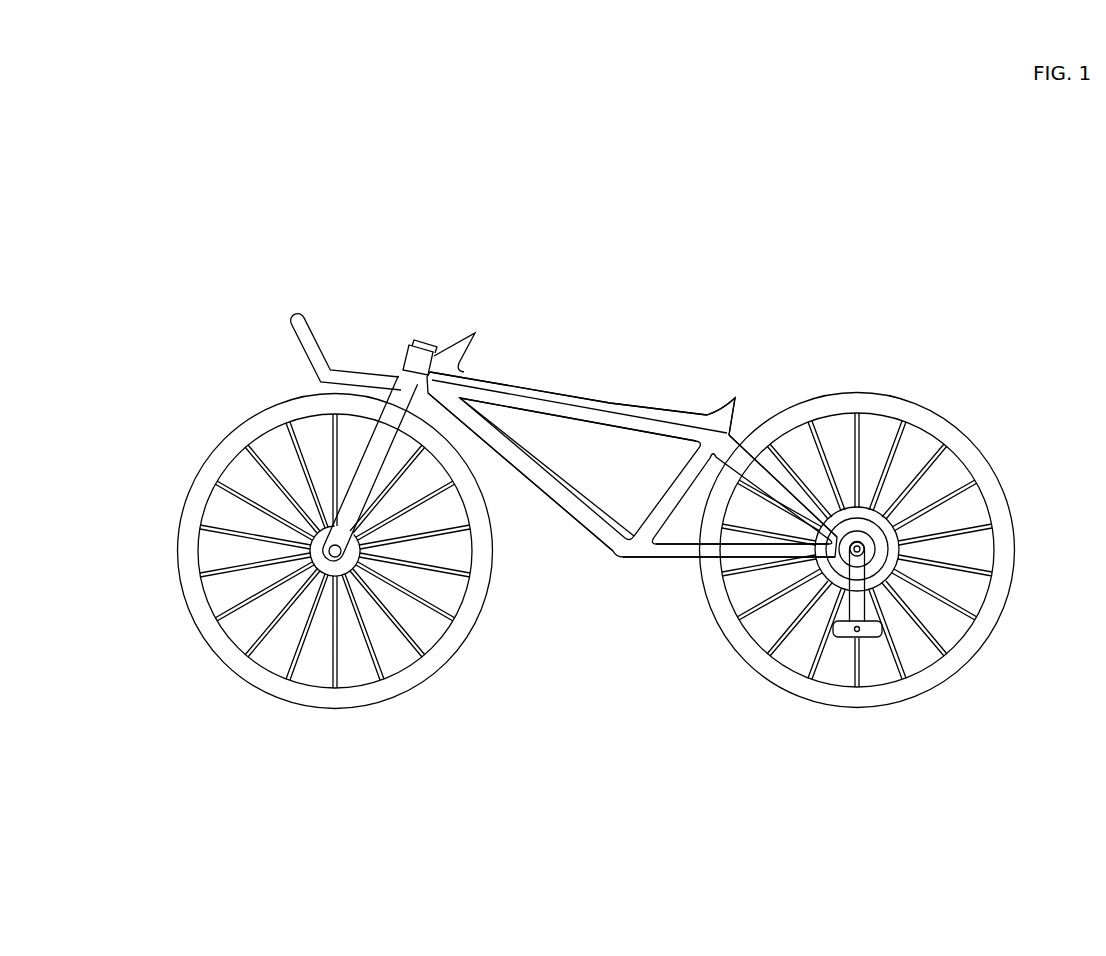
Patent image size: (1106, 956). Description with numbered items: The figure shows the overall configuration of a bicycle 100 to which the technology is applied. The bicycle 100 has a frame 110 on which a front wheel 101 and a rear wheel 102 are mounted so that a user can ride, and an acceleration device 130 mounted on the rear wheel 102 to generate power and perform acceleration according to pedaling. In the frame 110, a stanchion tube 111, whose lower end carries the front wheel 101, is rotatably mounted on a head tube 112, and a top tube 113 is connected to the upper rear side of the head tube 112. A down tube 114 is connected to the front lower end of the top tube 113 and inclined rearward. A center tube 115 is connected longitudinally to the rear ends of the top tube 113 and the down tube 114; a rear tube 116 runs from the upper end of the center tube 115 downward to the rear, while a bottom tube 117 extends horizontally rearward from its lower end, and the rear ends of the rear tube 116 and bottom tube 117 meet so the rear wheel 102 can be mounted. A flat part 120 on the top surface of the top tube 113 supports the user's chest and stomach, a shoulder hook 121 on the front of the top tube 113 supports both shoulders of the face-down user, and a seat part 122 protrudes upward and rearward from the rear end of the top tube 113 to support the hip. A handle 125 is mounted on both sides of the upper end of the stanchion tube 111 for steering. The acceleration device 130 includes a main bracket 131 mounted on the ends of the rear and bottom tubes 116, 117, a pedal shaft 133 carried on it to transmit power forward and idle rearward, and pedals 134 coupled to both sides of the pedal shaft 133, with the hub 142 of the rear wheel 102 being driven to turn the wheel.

The bicycle 100 is at (592, 727).
The front wheel 101 is at (190, 546).
The rear wheel 102 is at (972, 633).
The frame 110 is at (600, 578).
The stanchion tube 111 is at (375, 478).
The head tube 112 is at (413, 343).
The top tube 113 is at (556, 391).
The down tube 114 is at (543, 490).
The center tube 115 is at (667, 503).
The rear tube 116 is at (747, 436).
The bottom tube 117 is at (682, 557).
The flat part 120 is at (623, 412).
The shoulder hook 121 is at (475, 333).
The seat part 122 is at (715, 410).
The handle 125 is at (300, 322).
The acceleration device 130 is at (913, 532).
The main bracket 131 is at (835, 578).
The pedal shaft 133 is at (880, 585).
The pedals 134 is at (868, 638).
The hub 142 is at (870, 553).